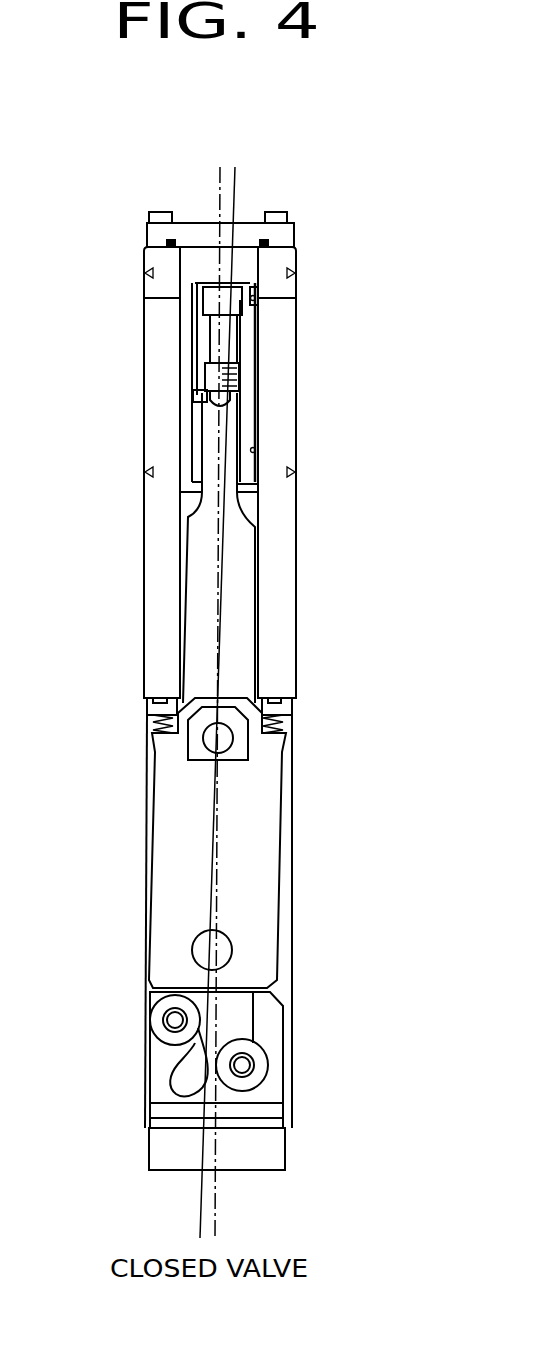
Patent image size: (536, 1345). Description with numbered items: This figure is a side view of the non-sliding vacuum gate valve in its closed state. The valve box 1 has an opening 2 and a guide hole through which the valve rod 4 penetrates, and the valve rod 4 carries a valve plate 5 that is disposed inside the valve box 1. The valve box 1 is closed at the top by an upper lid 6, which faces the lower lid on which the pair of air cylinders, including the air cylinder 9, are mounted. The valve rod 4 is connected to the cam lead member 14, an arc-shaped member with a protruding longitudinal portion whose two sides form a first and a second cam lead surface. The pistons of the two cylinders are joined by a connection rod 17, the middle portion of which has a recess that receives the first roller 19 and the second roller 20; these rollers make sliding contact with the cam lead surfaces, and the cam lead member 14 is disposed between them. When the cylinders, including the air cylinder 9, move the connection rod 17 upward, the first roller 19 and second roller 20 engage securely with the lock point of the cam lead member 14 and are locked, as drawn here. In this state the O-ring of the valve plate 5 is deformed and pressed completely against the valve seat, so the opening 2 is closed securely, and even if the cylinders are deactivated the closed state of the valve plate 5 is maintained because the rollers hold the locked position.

The valve box 1 is at (285, 525).
The opening 2 is at (280, 340).
The valve rod 4 is at (202, 618).
The valve plate 5 is at (247, 400).
The upper lid 6 is at (252, 233).
The air cylinder 9 is at (292, 847).
The cam lead member 14 is at (183, 1077).
The connection rod 17 is at (262, 1143).
The first roller 19 is at (162, 1030).
The second roller 20 is at (262, 1065).